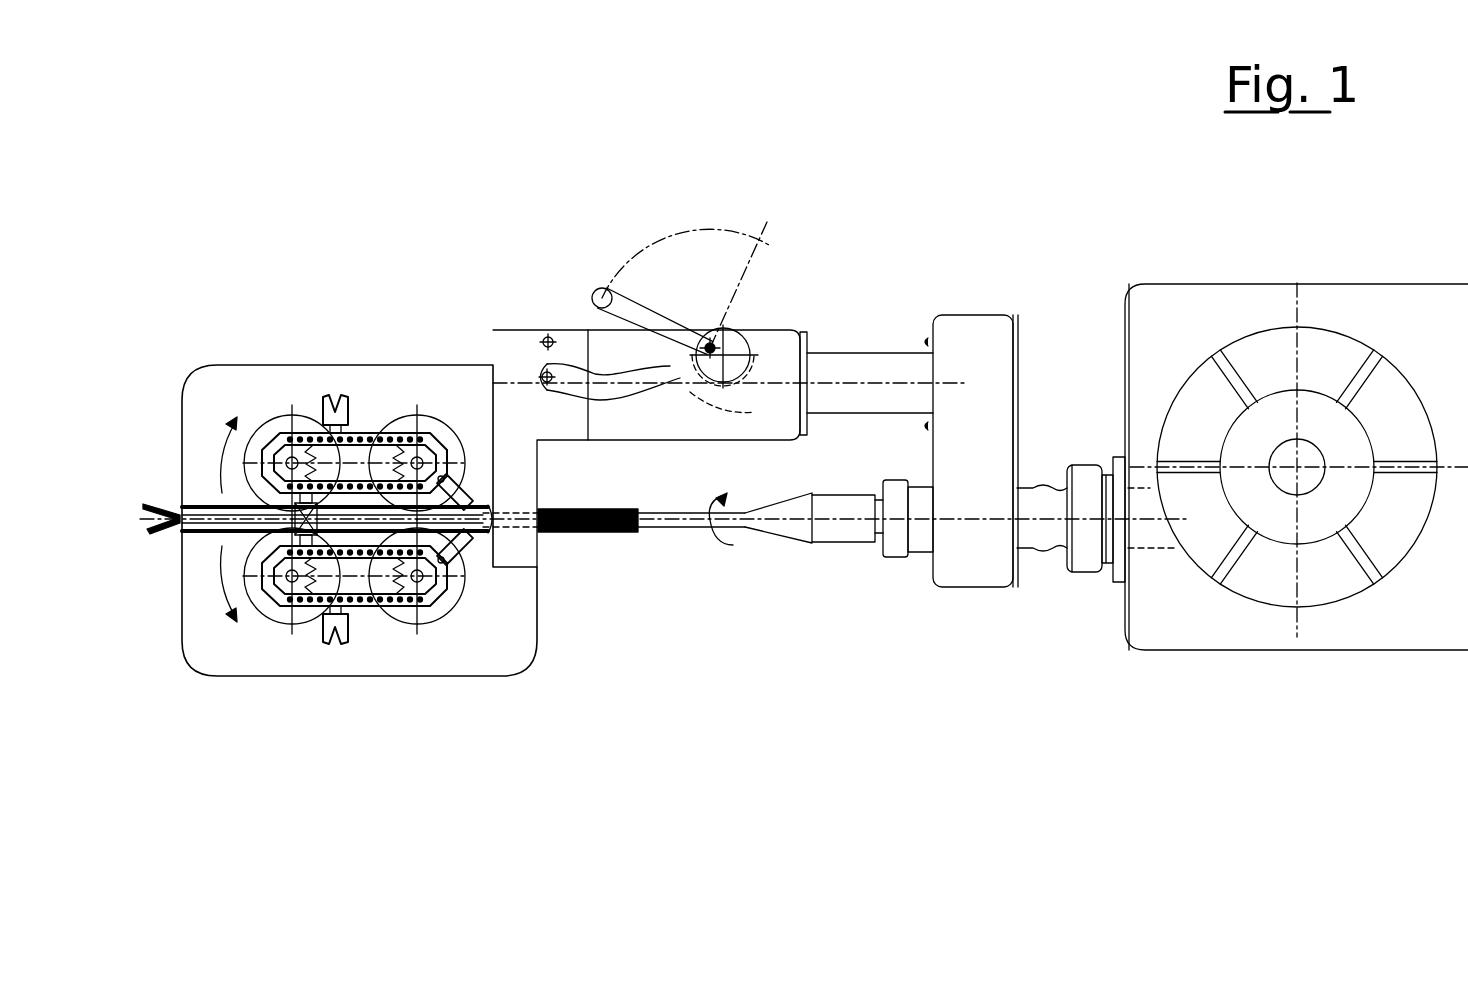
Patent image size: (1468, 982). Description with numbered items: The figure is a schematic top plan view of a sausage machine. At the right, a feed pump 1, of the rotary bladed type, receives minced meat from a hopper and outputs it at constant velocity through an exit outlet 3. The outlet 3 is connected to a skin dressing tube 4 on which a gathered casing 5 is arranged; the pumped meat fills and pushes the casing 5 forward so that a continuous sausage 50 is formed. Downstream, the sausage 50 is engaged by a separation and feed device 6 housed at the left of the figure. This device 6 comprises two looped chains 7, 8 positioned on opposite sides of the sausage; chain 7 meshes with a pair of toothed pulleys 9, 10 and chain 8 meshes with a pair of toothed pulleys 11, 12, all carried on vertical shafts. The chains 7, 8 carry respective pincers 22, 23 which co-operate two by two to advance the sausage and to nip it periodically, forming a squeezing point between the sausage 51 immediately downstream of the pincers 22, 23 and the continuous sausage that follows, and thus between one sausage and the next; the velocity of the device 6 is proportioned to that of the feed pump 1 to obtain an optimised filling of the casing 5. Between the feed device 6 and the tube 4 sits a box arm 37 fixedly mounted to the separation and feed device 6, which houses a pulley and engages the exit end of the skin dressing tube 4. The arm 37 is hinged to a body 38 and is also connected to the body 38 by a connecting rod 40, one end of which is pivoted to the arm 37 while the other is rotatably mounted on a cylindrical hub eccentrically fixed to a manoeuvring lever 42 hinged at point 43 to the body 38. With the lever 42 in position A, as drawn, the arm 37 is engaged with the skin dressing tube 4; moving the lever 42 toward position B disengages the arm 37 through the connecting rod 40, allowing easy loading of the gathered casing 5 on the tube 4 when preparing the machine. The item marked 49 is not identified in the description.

The feed pump 1 is at (1363, 651).
The exit outlet 3 is at (1085, 558).
The skin dressing tube 4 is at (848, 530).
The gathered casing 5 is at (615, 535).
The separation and feed device 6 is at (487, 678).
The chain 7 is at (382, 608).
The chain 8 is at (390, 435).
The toothed pulley 9 is at (275, 603).
The toothed pulley 10 is at (428, 607).
The toothed pulley 11 is at (440, 438).
The toothed pulley 12 is at (315, 432).
The pincer 22 is at (468, 535).
The pincer 23 is at (458, 478).
The box arm 37 is at (535, 372).
The body 38 is at (788, 340).
The connecting rod 40 is at (662, 375).
The manoeuvring lever 42 is at (665, 322).
The hinge point 43 is at (742, 300).
The lever position 49 is at (738, 413).
The continuous sausage 50 is at (345, 600).
The sausage 51 is at (200, 533).